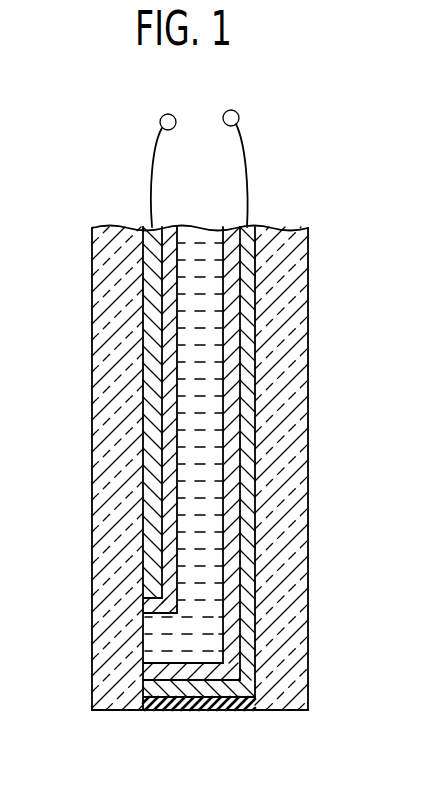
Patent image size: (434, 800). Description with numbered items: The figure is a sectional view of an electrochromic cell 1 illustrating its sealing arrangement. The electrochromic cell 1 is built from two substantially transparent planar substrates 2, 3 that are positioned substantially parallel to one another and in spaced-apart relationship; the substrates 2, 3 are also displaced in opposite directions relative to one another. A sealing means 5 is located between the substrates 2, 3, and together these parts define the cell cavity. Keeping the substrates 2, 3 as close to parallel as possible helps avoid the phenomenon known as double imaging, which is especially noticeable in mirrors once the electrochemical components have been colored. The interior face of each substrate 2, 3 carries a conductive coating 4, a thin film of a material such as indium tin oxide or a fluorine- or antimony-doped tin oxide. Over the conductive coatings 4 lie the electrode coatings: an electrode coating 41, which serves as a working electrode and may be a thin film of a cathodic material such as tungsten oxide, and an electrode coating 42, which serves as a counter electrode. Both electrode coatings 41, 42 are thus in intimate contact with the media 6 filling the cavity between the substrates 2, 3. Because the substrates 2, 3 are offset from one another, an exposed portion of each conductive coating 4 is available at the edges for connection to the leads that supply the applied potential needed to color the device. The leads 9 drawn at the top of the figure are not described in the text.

The electrochemical cell 1 is at (334, 220).
The casing half 2 is at (100, 301).
The casing half 3 is at (296, 284).
The electrodes 4 is at (153, 407).
The first electrode 41 is at (168, 478).
The second electrode 42 is at (233, 478).
The bottom layer 5 is at (198, 710).
The electrolyte 6 is at (210, 543).
The lead wires 9 is at (237, 145).